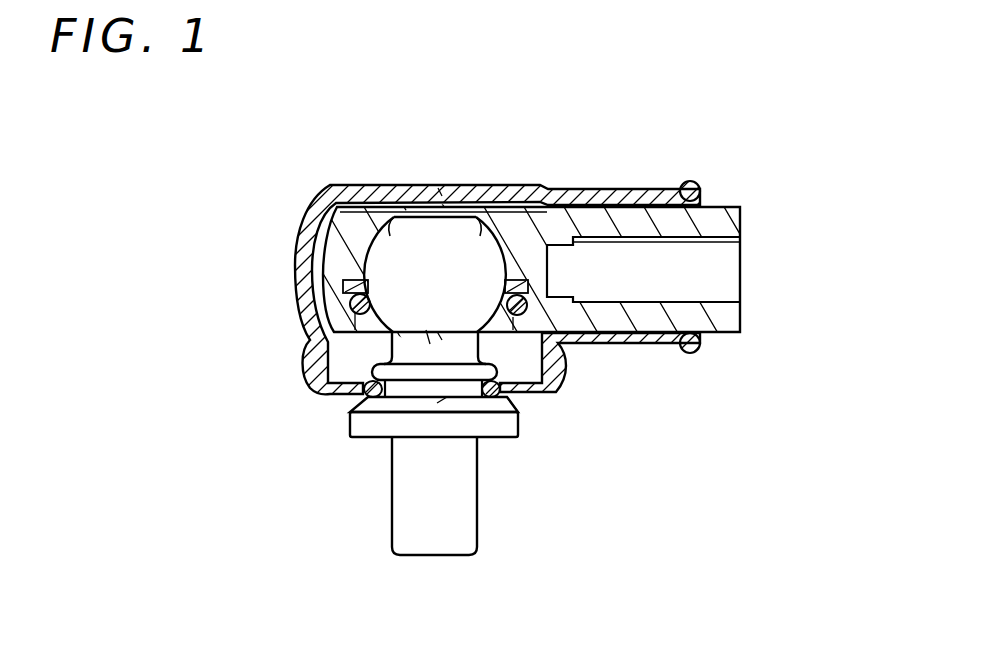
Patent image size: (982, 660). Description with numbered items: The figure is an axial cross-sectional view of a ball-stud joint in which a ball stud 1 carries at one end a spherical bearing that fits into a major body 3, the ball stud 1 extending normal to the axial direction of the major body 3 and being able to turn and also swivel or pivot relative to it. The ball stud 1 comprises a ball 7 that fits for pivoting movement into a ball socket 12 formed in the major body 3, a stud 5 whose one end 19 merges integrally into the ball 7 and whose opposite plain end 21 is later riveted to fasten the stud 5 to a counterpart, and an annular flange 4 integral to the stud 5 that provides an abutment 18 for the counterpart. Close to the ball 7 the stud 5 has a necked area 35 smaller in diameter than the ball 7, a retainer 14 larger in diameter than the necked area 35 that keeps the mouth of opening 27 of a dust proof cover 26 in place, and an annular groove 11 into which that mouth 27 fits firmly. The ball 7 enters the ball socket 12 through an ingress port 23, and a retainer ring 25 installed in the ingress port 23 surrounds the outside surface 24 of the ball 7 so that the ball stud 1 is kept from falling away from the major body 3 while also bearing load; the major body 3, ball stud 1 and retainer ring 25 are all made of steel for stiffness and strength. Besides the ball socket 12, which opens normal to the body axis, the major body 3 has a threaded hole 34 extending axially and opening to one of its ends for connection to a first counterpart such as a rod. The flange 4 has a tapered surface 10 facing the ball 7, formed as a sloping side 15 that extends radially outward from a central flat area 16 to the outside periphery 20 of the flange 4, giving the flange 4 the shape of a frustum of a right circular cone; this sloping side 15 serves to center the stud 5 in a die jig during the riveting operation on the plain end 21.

The ball stud 1 is at (368, 445).
The major body 3 is at (532, 235).
The annular flange 4 is at (507, 428).
The stud 5 is at (440, 488).
The ball 7 is at (400, 258).
The tapered surface 10 is at (512, 409).
The annular groove 11 is at (328, 388).
The ball socket 12 is at (323, 198).
The retainer 14 is at (413, 358).
The sloping side 15 is at (437, 403).
The central flat area 16 is at (467, 398).
The abutment 18 is at (508, 440).
The one end of stud 19 is at (428, 343).
The outside periphery 20 is at (350, 428).
The plain end 21 is at (437, 540).
The ingress port 23 is at (505, 337).
The outside surface 24 is at (345, 292).
The retainer ring 25 is at (522, 297).
The dust proof cover 26 is at (440, 192).
The mouth of opening 27 is at (382, 386).
The threaded hole 34 is at (672, 253).
The necked area 35 is at (420, 348).